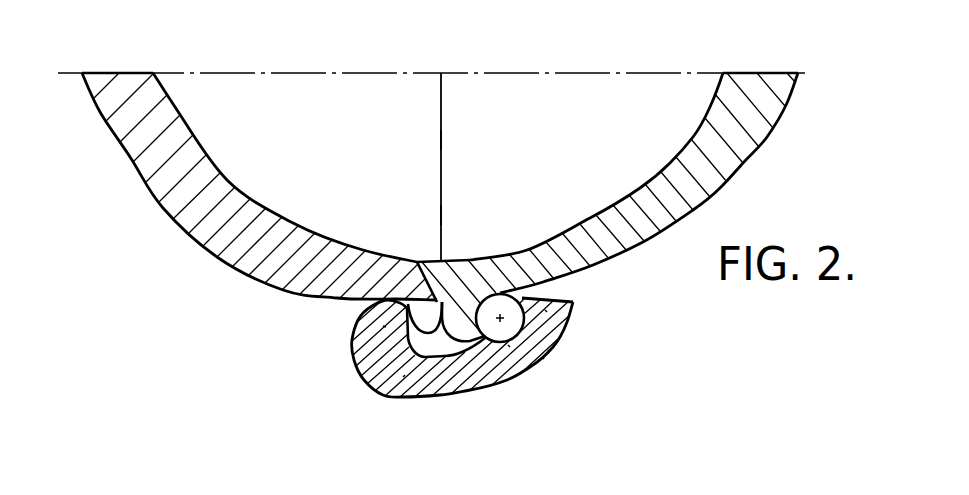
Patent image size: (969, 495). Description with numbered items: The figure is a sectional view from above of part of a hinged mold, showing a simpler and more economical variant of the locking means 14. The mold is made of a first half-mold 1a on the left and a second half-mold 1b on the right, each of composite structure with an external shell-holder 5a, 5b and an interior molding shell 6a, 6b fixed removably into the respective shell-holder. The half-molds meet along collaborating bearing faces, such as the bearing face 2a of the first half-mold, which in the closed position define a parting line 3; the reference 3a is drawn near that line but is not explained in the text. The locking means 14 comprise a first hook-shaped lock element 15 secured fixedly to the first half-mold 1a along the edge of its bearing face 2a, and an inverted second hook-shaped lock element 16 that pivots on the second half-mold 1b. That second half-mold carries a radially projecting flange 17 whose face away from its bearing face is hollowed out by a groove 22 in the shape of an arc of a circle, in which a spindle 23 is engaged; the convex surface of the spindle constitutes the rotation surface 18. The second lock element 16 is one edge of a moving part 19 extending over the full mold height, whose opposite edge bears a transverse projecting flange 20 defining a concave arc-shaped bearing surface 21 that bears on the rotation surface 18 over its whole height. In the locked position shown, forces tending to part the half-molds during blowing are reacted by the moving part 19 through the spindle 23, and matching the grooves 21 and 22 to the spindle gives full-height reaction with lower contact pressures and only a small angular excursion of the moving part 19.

The first half-mold 1a is at (166, 229).
The second half-mold 1b is at (753, 165).
The bearing face 2a is at (441, 143).
The parting line 3 is at (442, 105).
The axis point 3a is at (441, 217).
The shell-holder 5a is at (163, 167).
The shell-holder 5b is at (745, 113).
The shell 6a is at (190, 95).
The shell 6b is at (651, 92).
The locking means 14 is at (355, 388).
The first hook-shaped lock element 15 is at (383, 326).
The second hook-shaped lock element 16 is at (362, 347).
The radially projecting flange 17 is at (455, 315).
The rotation surface 18 is at (542, 357).
The moving part 19 is at (403, 377).
The transverse projecting flange 20 is at (545, 310).
The bearing surface in the shape of an arc of a circle 21 is at (548, 350).
The groove 22 is at (508, 345).
The spindle 23 is at (505, 303).